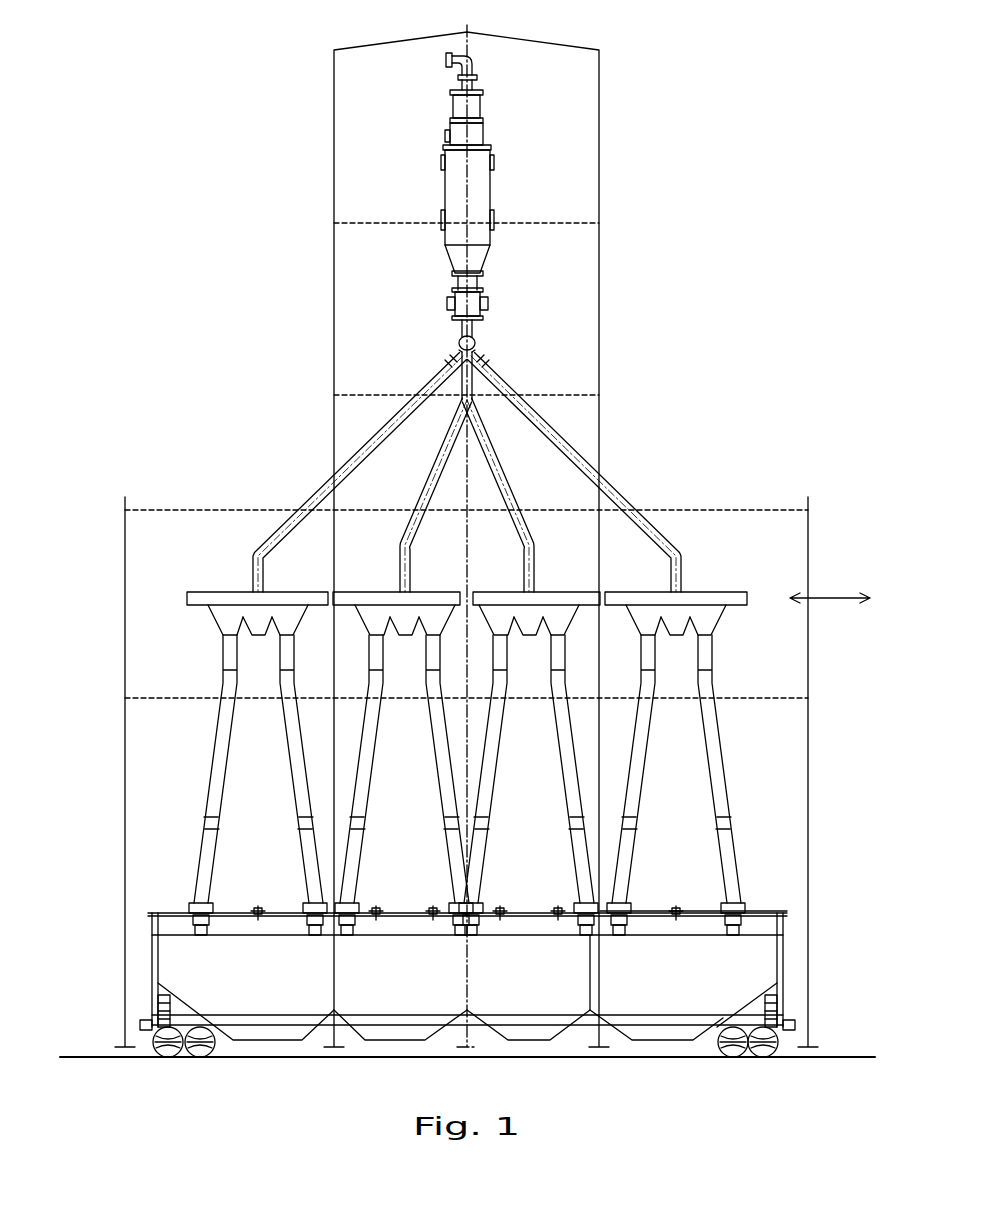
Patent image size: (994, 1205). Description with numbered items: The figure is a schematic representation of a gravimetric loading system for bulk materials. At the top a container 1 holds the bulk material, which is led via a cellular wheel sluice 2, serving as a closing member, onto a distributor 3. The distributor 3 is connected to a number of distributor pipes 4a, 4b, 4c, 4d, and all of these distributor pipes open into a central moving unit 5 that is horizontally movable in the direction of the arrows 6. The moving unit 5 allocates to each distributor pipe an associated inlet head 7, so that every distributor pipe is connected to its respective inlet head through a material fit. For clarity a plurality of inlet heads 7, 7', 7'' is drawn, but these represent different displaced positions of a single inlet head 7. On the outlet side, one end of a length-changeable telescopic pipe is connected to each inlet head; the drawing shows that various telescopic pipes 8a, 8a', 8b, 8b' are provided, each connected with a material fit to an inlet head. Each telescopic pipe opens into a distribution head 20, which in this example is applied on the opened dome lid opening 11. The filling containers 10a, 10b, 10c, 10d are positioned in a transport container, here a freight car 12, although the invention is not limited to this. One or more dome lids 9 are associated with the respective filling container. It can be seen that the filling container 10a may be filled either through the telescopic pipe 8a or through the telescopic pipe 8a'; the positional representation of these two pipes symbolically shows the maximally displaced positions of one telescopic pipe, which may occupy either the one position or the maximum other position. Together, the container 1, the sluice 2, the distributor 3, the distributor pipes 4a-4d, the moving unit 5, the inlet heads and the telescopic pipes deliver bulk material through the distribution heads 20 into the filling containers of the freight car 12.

The container 1 is at (478, 186).
The cellular wheel sluice 2 is at (480, 300).
The distributor 3 is at (476, 342).
The distributor pipe 4a is at (333, 462).
The distributor pipe 4b is at (433, 476).
The distributor pipe 4c is at (513, 482).
The distributor pipe 4d is at (603, 452).
The moving unit 5 is at (708, 598).
The arrow direction 6 is at (835, 598).
The inlet head 7 is at (602, 658).
The inlet head 7' is at (666, 646).
The inlet head 7'' is at (566, 652).
The telescopic pipe 8a is at (750, 769).
The telescopic pipe 8a' is at (659, 769).
The telescopic pipe 8b is at (549, 769).
The telescopic pipe 8b' is at (514, 769).
The dome lid 9 is at (679, 897).
The distributor head 20 is at (742, 895).
The filling container 10a is at (765, 952).
The filling container 10b is at (513, 935).
The filling container 10c is at (384, 935).
The filling container 10d is at (226, 935).
The dome lid opening 11 is at (742, 905).
The freight car 12 is at (185, 958).